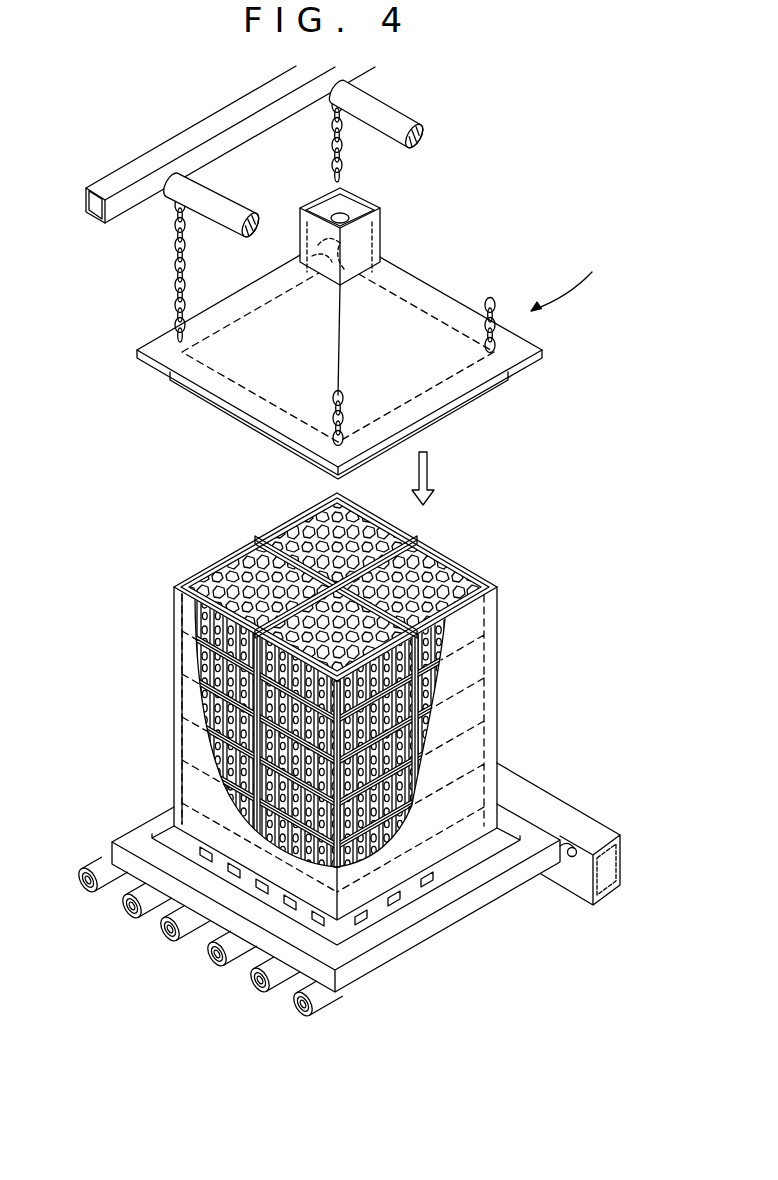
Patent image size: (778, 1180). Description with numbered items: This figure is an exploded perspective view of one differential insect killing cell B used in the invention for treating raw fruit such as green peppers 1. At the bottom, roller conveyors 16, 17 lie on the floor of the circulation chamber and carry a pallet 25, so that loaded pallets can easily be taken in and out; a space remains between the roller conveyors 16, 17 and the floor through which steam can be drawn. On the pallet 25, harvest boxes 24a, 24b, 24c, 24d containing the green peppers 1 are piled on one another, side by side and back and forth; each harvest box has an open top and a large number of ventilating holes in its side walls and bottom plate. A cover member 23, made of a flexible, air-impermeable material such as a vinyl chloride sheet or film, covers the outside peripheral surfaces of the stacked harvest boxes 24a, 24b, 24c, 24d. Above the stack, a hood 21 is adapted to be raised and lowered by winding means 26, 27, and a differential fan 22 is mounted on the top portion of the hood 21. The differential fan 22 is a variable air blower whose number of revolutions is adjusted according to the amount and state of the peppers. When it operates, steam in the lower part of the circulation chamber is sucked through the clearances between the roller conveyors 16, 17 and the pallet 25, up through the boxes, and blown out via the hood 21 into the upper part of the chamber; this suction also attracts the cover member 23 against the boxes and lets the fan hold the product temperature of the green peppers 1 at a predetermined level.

The winding means 27 is at (383, 113).
The winding means 26 is at (172, 260).
The differential fan 22 is at (355, 202).
The hood 21 is at (423, 283).
The differential insect killing cell B is at (566, 281).
The green pepper 1 is at (292, 540).
The harvest box 24a is at (457, 563).
The harvest box 24b is at (385, 519).
The harvest box 24c is at (210, 600).
The harvest box 24d is at (440, 680).
The cover member 23 is at (173, 690).
The pallet 25 is at (507, 860).
The roller conveyor 16 is at (193, 930).
The roller conveyor 17 is at (590, 828).